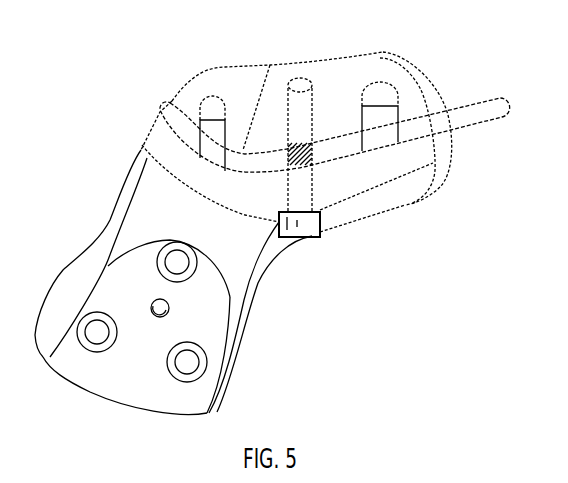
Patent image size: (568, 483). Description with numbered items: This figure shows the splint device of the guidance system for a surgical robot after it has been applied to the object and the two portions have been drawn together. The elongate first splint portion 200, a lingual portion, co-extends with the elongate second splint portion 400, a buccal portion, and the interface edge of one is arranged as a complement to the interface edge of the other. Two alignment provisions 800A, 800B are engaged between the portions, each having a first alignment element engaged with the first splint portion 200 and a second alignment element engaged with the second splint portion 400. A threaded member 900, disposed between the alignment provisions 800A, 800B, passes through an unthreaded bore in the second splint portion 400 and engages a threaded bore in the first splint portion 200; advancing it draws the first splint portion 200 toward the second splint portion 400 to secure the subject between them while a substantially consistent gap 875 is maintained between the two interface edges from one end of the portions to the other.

The first splint portion 200 is at (265, 62).
The alignment provision 800A is at (475, 97).
The alignment provision 800B is at (187, 104).
The gap 875 is at (483, 130).
The second splint portion 400 is at (397, 223).
The threaded member 900 is at (312, 231).